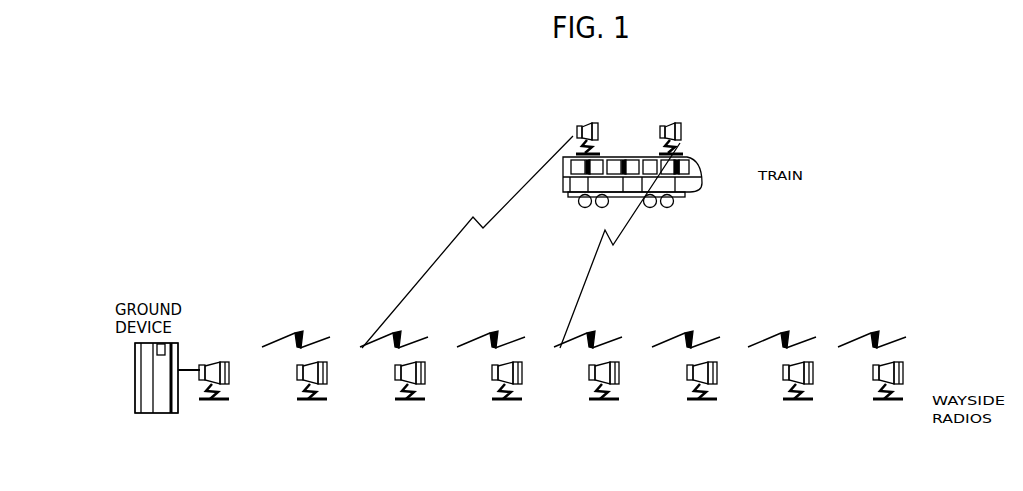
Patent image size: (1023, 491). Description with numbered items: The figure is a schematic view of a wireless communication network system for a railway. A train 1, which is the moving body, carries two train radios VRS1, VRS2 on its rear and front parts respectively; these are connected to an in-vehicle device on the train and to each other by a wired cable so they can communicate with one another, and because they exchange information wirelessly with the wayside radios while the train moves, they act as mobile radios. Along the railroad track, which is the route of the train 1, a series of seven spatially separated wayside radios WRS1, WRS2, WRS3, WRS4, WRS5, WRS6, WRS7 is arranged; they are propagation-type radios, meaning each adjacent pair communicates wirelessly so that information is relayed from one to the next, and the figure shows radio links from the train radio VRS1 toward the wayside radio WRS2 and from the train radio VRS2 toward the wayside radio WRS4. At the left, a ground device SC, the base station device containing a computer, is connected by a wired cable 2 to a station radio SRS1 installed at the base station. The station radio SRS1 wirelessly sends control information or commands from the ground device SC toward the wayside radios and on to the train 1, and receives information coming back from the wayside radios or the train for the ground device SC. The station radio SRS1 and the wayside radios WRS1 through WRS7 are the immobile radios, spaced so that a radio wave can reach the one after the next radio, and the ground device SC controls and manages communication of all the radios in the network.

The train 1 is at (702, 183).
The wired cable 2 is at (190, 368).
The ground device SC is at (156, 387).
The train radio VRS1 is at (537, 120).
The train radio VRS2 is at (713, 121).
The station radio SRS1 is at (229, 411).
The wayside radio WRS1 is at (301, 375).
The wayside radio WRS2 is at (400, 375).
The wayside radio WRS3 is at (497, 375).
The wayside radio WRS4 is at (596, 375).
The wayside radio WRS5 is at (690, 375).
The wayside radio WRS6 is at (789, 375).
The wayside radio WRS7 is at (879, 375).